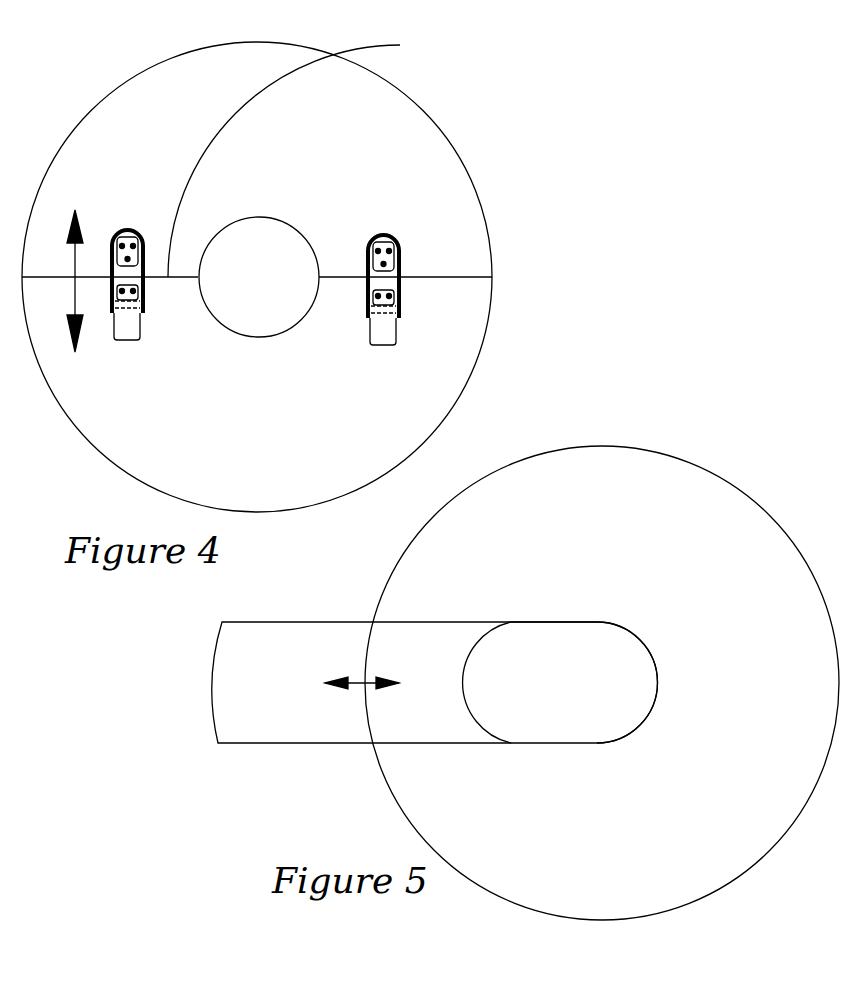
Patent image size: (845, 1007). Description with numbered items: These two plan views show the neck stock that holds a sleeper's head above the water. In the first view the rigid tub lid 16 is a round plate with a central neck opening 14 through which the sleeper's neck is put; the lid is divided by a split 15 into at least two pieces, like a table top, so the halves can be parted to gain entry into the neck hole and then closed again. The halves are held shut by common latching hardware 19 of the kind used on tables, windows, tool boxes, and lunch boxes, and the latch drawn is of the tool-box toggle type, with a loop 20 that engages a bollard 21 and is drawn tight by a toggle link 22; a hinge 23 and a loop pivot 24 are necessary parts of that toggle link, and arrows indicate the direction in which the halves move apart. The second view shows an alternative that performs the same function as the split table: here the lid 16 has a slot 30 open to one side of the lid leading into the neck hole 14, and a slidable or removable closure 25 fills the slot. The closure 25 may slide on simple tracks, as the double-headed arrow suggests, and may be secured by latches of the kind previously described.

In FIG. 4, the opening 14 is at (283, 220).
In FIG. 5, the opening 14 is at (647, 640).
In FIG. 4, the split 15 is at (400, 45).
In FIG. 4, the tub lid 16 is at (463, 142).
In FIG. 5, the tub lid 16 is at (638, 438).
In FIG. 4, the latching hardware 19 is at (408, 230).
In FIG. 4, the loop 20 is at (402, 248).
In FIG. 4, the bollard 21 is at (402, 272).
In FIG. 4, the toggle link 22 is at (399, 343).
In FIG. 4, the hinge 23 is at (402, 305).
In FIG. 4, the loop pivot 24 is at (402, 317).
In FIG. 5, the slidable closure 25 is at (333, 745).
In FIG. 5, the slot 30 is at (553, 618).